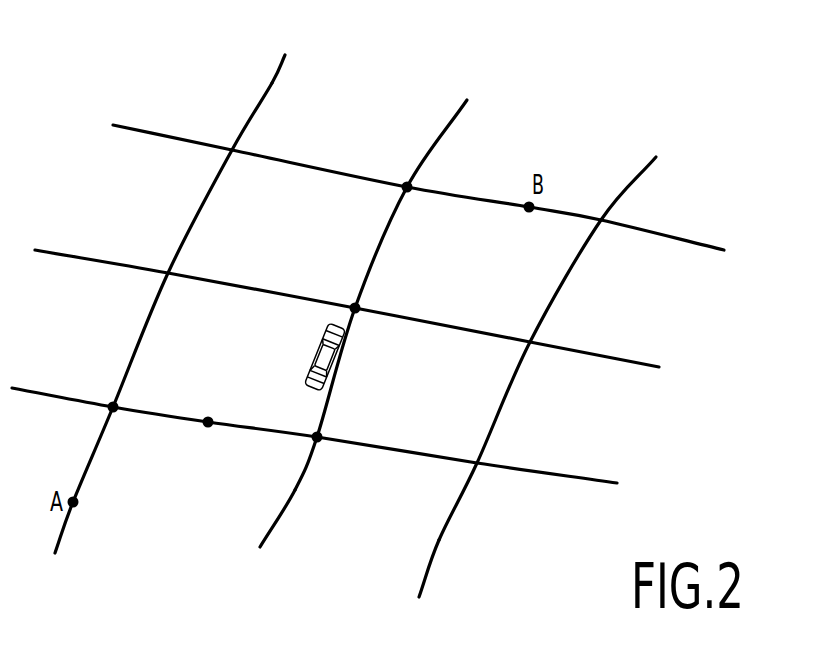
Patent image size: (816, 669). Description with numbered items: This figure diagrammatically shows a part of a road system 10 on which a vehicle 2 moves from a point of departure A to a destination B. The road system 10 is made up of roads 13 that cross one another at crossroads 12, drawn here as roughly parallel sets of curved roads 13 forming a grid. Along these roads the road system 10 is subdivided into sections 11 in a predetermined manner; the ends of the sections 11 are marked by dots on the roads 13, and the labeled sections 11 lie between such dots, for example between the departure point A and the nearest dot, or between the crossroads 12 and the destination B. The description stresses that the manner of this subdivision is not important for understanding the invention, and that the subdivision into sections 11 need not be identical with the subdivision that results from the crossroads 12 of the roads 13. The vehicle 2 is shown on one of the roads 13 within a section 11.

The vehicle 2 is at (321, 333).
The road system 10 is at (368, 326).
The sections 11 is at (471, 200).
The crossroads 12 is at (233, 150).
The roads 13 is at (161, 134).